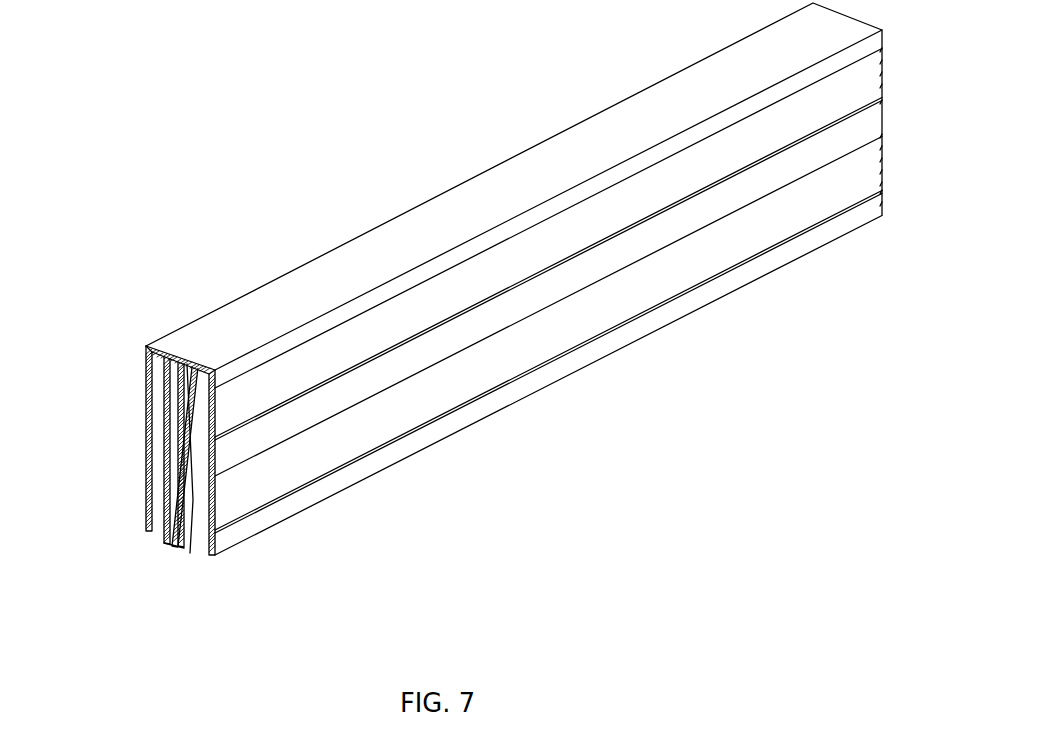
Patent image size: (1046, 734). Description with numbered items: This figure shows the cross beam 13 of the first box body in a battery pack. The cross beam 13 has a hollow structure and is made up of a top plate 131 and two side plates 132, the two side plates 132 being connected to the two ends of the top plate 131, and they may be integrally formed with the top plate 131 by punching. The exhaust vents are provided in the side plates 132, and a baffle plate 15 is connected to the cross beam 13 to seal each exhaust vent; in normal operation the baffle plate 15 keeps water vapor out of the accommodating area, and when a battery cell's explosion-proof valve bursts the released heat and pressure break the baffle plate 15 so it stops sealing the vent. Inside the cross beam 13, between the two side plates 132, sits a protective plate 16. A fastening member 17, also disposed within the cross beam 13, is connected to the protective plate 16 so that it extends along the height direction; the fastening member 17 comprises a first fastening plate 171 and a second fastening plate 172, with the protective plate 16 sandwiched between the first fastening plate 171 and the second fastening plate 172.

The cross beam 13 is at (472, 98).
The top plate 131 is at (582, 150).
The side plate 132 is at (328, 485).
The baffle plate 15 is at (283, 382).
The protective plate 16 is at (173, 412).
The fastening member 17 is at (68, 575).
The first fastening plate 171 is at (172, 477).
The second fastening plate 172 is at (190, 553).